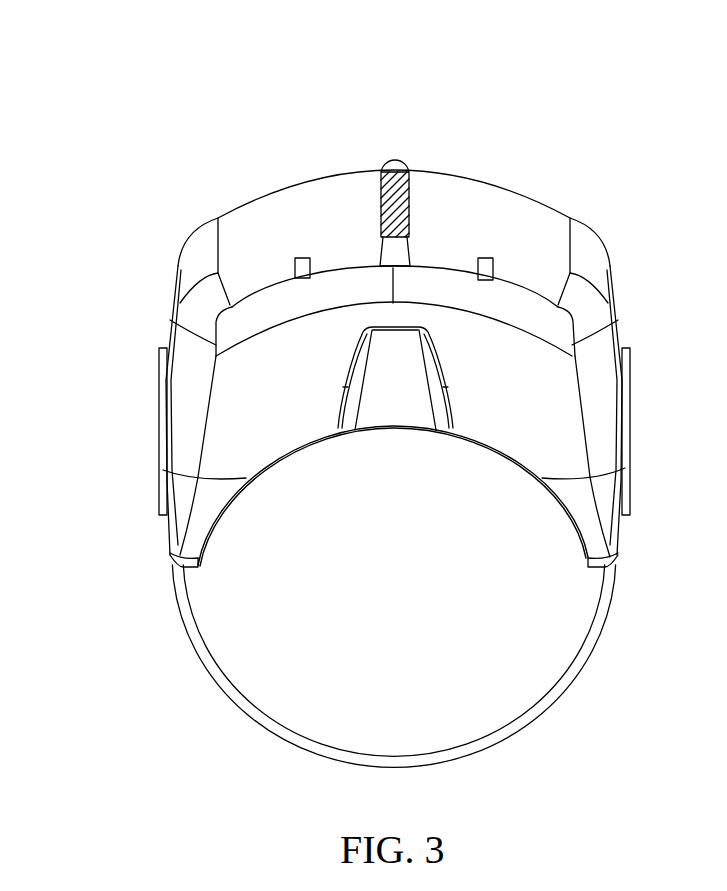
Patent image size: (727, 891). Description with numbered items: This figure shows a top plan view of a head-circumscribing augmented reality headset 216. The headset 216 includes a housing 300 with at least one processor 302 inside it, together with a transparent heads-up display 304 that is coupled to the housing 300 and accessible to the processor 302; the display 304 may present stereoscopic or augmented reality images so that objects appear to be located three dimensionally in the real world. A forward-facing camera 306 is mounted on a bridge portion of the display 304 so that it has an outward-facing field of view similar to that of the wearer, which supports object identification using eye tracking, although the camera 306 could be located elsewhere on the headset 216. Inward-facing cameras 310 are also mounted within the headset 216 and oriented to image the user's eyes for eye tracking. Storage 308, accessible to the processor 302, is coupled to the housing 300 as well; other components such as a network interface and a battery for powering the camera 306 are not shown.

The headset 216 is at (134, 71).
The housing 300 is at (560, 693).
The processor 302 is at (280, 324).
The display 304 is at (296, 187).
The forward-facing camera 306 is at (393, 158).
The storage 308 is at (490, 318).
The inward-facing cameras 310 is at (302, 258).